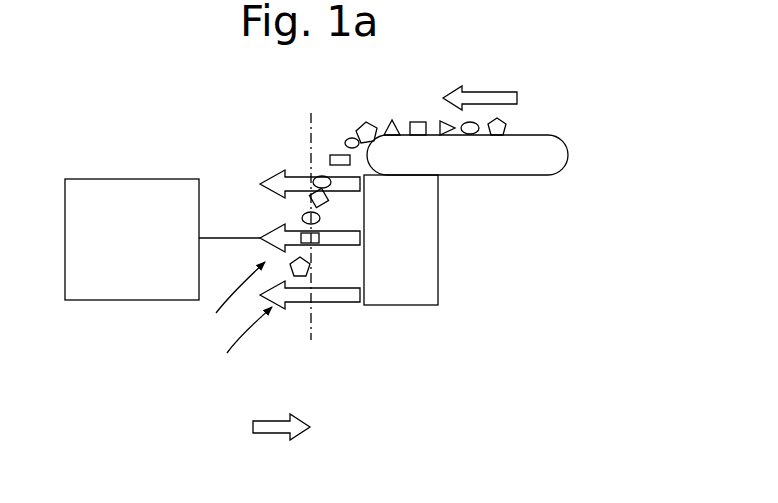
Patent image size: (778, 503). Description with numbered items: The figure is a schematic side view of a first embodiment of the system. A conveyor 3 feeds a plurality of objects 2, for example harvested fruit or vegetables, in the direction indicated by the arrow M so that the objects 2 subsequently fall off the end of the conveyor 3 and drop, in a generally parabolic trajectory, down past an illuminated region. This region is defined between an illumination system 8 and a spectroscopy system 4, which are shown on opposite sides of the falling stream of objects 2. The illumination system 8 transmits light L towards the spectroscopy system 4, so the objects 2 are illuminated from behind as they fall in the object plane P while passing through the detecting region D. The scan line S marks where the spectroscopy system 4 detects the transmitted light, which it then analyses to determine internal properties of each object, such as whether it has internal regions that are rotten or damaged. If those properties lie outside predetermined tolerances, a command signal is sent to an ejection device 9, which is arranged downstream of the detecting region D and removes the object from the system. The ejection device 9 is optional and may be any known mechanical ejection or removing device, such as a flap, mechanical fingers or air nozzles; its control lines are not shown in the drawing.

The objects 2 is at (418, 122).
The conveyor 3 is at (533, 134).
The spectroscopy system 4 is at (92, 248).
The illumination system 8 is at (418, 253).
The ejection device 9 is at (280, 423).
The conveying direction arrow M is at (480, 87).
The object plane P is at (310, 224).
The scan line S is at (232, 238).
The detecting region D is at (229, 299).
The light L is at (240, 340).